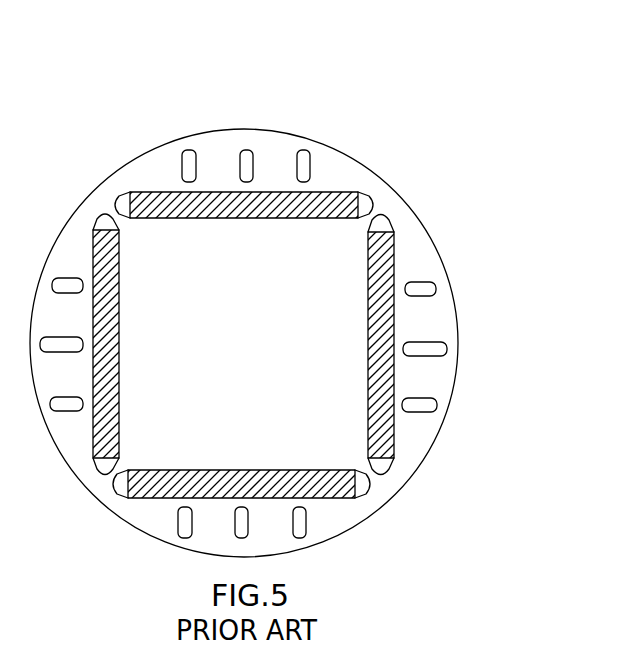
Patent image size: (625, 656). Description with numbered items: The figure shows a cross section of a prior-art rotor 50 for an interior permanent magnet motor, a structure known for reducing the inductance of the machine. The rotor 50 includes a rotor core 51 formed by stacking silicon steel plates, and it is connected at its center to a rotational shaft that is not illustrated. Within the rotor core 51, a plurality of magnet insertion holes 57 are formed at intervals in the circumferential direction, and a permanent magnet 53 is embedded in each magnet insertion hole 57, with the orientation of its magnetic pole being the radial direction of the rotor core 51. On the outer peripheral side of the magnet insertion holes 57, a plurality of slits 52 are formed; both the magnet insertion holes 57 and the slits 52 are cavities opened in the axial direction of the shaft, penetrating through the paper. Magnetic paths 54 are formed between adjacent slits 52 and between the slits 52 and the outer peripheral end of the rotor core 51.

The rotor 50 is at (408, 92).
The rotor core 51 is at (157, 170).
The slit 52 is at (252, 147).
The permanent magnet 53 is at (338, 193).
The magnetic path 54 is at (213, 155).
The magnet insertion hole 57 is at (373, 207).